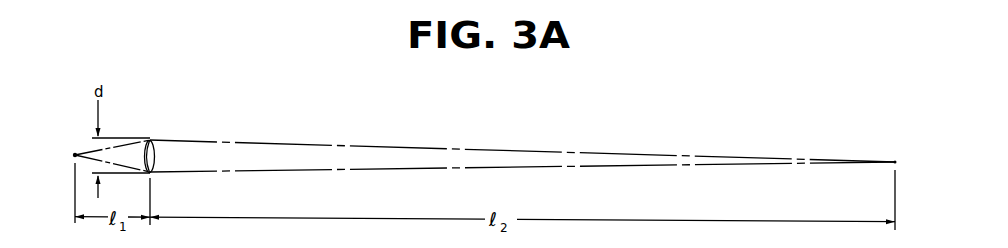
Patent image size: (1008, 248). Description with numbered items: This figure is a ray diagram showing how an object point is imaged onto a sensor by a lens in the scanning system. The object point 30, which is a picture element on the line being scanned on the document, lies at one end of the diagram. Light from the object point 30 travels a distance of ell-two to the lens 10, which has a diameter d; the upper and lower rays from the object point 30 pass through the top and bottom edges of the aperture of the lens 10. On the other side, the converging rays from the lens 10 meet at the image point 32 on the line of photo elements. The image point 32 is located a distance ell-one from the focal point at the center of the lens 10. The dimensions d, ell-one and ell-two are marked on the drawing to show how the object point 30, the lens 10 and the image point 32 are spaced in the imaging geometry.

The image point 32 is at (75, 153).
The lens 10 is at (148, 141).
The object point 30 is at (896, 162).